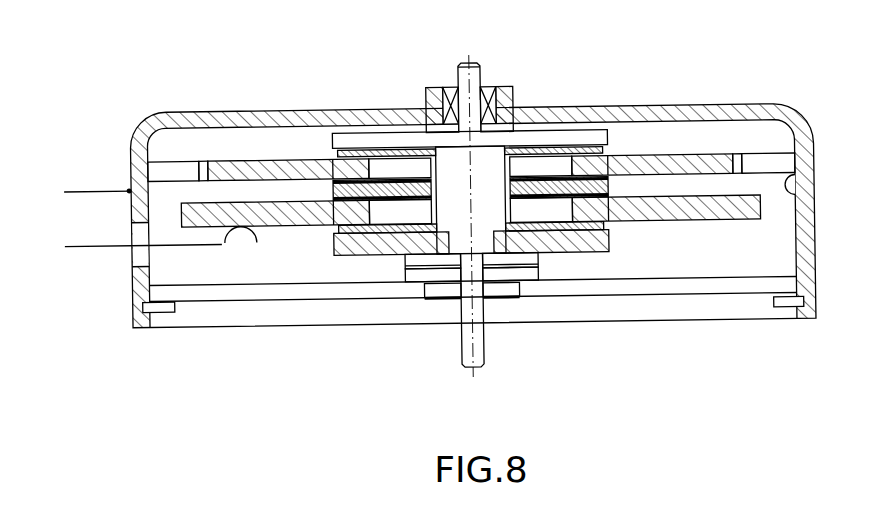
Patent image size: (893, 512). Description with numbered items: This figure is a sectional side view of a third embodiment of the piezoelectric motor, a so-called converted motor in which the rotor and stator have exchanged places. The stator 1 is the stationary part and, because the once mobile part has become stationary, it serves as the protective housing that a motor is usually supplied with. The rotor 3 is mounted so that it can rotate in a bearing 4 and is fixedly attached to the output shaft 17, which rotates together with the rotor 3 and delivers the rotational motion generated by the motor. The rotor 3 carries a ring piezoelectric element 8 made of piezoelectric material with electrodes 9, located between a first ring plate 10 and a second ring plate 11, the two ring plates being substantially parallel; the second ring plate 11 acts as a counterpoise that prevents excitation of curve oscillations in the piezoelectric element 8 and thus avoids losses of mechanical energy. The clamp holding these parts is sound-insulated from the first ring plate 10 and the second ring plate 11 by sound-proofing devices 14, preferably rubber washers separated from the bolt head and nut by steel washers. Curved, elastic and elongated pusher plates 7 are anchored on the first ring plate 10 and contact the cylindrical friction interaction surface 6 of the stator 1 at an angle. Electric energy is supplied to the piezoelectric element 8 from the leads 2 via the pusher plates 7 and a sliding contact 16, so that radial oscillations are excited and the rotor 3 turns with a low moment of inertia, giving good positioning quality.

The stator 1 is at (749, 90).
The leads 2 is at (92, 192).
The rotor 3 is at (449, 368).
The bearing 4 is at (500, 275).
The friction interaction surface 6 is at (813, 204).
The pusher plates 7 is at (168, 170).
The ring piezoelectric element 8 is at (600, 180).
The electrodes 9 is at (408, 178).
The first ring plate 10 is at (277, 170).
The second ring plate 11 is at (302, 217).
The sound-proofing devices 14 is at (543, 150).
The sliding contact 16 is at (198, 246).
The output shaft 17 is at (482, 77).